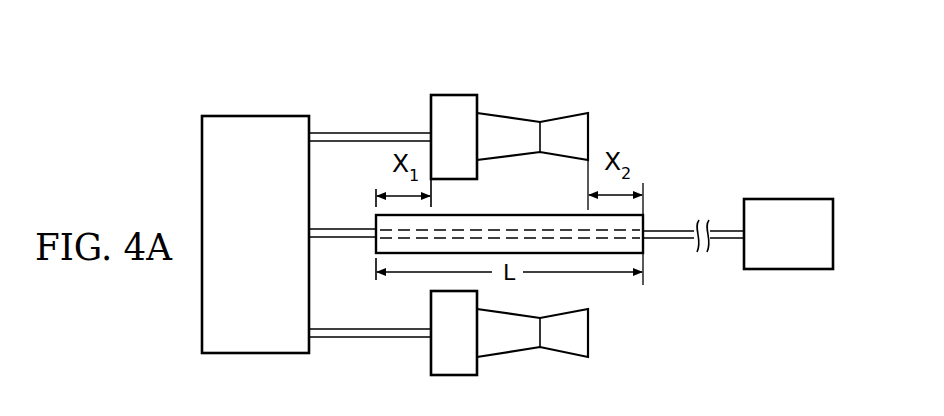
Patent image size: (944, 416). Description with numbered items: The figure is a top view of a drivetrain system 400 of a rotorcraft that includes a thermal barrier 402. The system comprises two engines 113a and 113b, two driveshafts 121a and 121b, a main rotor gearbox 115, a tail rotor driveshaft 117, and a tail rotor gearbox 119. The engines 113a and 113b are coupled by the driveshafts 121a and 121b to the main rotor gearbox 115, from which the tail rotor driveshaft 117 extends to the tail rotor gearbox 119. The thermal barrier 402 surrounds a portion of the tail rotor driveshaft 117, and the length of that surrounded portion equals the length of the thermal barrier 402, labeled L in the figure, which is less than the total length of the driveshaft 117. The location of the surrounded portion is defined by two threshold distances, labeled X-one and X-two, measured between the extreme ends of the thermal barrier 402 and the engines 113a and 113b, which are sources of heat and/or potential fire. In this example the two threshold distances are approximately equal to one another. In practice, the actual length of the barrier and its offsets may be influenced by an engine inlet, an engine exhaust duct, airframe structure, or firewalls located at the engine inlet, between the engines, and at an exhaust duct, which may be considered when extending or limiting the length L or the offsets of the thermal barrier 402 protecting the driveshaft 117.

The drivetrain system 400 is at (294, 60).
The main rotor gearbox 115 is at (257, 115).
The driveshaft 121a is at (370, 131).
The driveshaft 121b is at (370, 338).
The engine 113a is at (565, 113).
The engine 113b is at (565, 357).
The thermal barrier 402 is at (525, 213).
The tail rotor driveshaft 117 is at (670, 230).
The tail rotor gearbox 119 is at (788, 199).